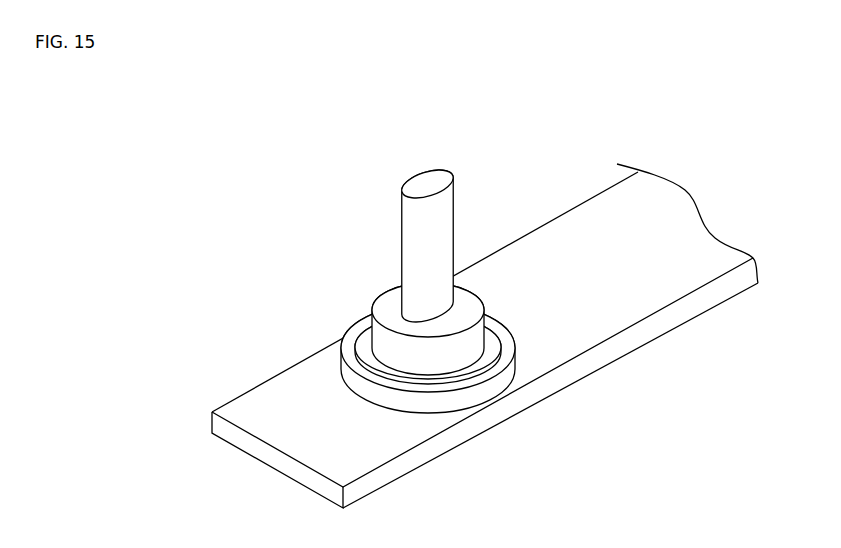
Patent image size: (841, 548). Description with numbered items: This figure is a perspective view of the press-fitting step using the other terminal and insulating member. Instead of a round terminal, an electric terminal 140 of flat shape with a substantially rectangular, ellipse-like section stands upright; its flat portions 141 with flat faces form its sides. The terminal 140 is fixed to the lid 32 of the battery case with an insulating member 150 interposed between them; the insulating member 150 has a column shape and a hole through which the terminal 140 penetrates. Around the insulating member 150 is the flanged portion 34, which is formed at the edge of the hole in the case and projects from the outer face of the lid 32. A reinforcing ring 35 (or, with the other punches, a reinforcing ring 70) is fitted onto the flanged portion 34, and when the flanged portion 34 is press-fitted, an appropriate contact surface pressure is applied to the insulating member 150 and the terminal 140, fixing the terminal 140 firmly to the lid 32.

The lid 32 is at (250, 413).
The flanged portion 34 is at (367, 348).
The reinforcing ring 35 is at (391, 395).
The reinforcing ring 70 is at (396, 364).
The electric terminal 140 is at (447, 226).
The flat portion 141 is at (426, 178).
The insulating member 150 is at (465, 302).